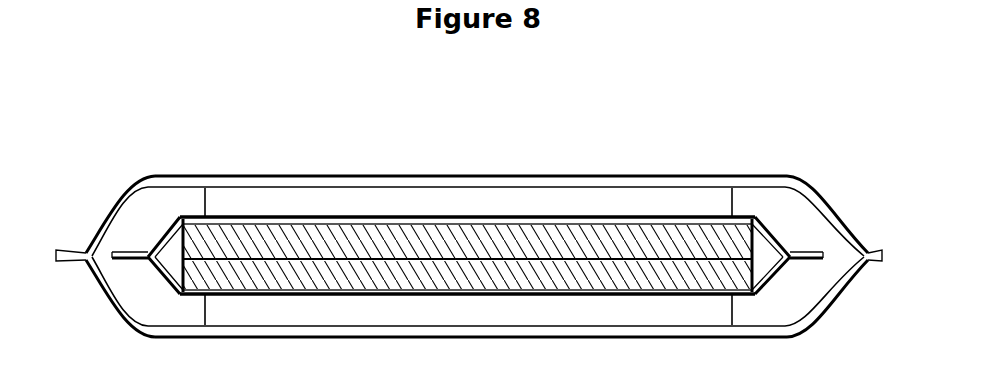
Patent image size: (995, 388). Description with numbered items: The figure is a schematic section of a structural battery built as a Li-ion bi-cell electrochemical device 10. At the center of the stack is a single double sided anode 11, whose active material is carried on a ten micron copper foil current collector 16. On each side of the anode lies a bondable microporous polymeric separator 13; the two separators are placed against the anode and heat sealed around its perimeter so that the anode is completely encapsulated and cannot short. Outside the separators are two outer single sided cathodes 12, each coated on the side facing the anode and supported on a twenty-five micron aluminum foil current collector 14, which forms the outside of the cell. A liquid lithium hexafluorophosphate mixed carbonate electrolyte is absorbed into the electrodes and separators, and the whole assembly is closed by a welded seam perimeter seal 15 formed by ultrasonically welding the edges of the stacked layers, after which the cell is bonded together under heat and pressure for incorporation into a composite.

The Li-ion bi-cell electrochemical device 10 is at (556, 104).
The double sided anode 11 is at (433, 243).
The outer single sided cathode 12 is at (333, 193).
The bondable microporous polymeric separator 13 is at (116, 271).
The aluminum foil current collector 14 is at (104, 218).
The welded seam perimeter seal 15 is at (62, 263).
The copper foil current collector 16 is at (676, 260).